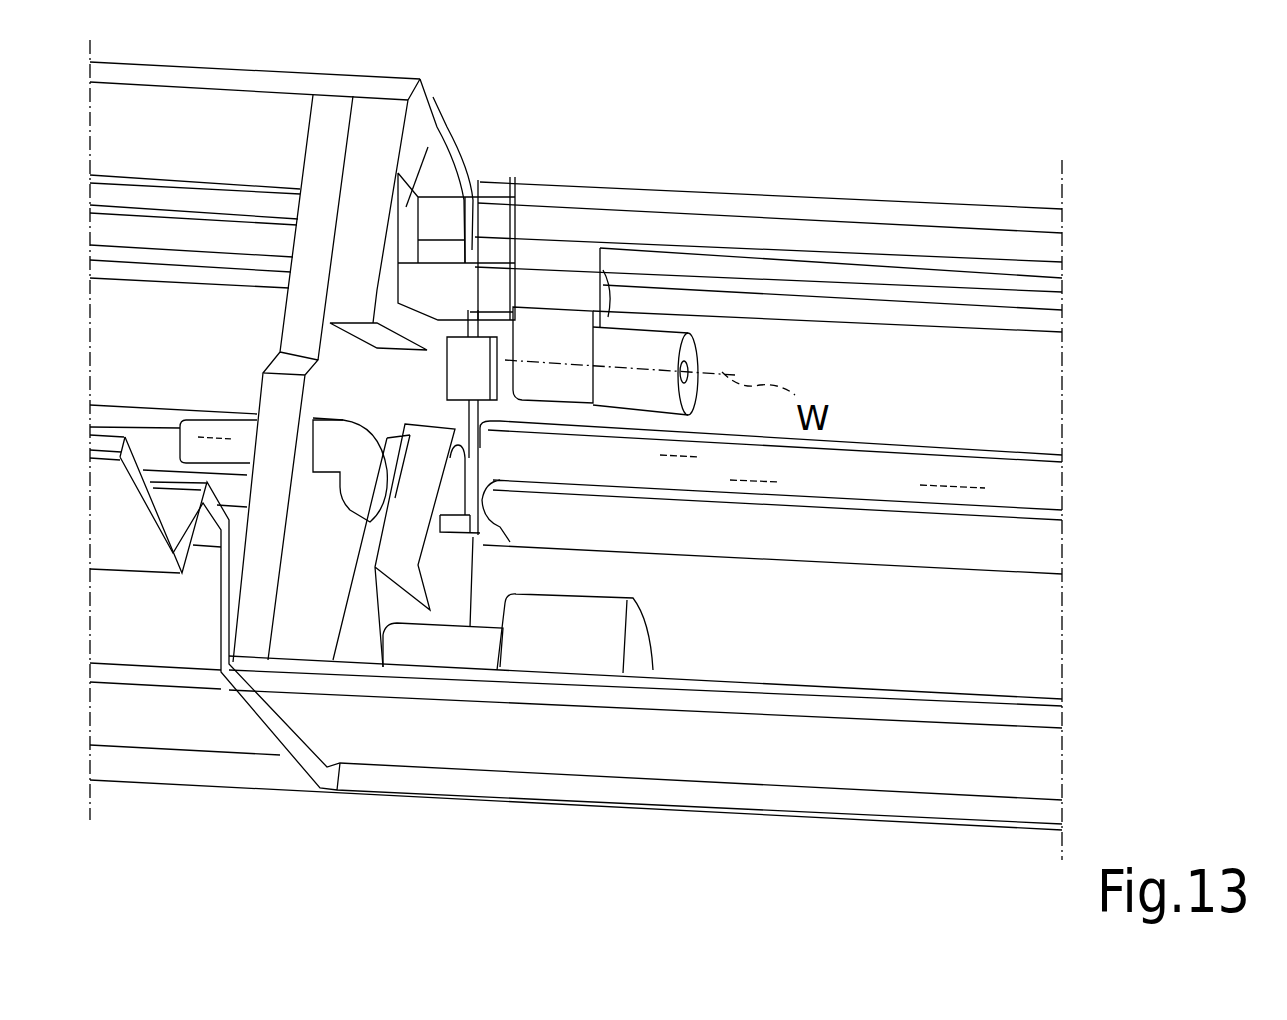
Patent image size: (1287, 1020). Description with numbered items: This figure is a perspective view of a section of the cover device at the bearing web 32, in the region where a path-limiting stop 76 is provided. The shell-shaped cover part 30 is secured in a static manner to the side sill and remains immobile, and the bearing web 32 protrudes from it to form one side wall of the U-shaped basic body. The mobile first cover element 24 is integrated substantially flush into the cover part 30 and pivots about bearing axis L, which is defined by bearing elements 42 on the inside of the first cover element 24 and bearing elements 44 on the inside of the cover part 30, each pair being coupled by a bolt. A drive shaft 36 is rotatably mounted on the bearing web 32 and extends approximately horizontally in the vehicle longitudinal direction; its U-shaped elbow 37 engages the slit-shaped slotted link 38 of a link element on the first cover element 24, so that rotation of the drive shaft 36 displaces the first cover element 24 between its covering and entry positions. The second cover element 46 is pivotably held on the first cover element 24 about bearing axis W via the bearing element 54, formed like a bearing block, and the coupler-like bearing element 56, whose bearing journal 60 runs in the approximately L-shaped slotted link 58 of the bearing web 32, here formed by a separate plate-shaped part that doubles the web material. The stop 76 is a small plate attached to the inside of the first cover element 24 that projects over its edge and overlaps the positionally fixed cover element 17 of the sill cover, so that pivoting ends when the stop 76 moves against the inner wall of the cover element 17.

The cover element 17 is at (442, 112).
The first cover element 24 is at (1040, 400).
The cover part 30 is at (265, 745).
The bearing web 32 is at (331, 122).
The drive shaft 36 is at (1050, 485).
The U-shaped elbow 37 is at (500, 494).
The slotted link 38 is at (434, 571).
The bearing element 42 is at (460, 640).
The bearing element 44 is at (607, 638).
The second cover element 46 is at (828, 225).
The bearing element 54 is at (660, 337).
The bearing element 56 is at (568, 337).
The slotted link 58 is at (408, 208).
The bearing journal 60 is at (480, 205).
The stop 76 is at (477, 340).